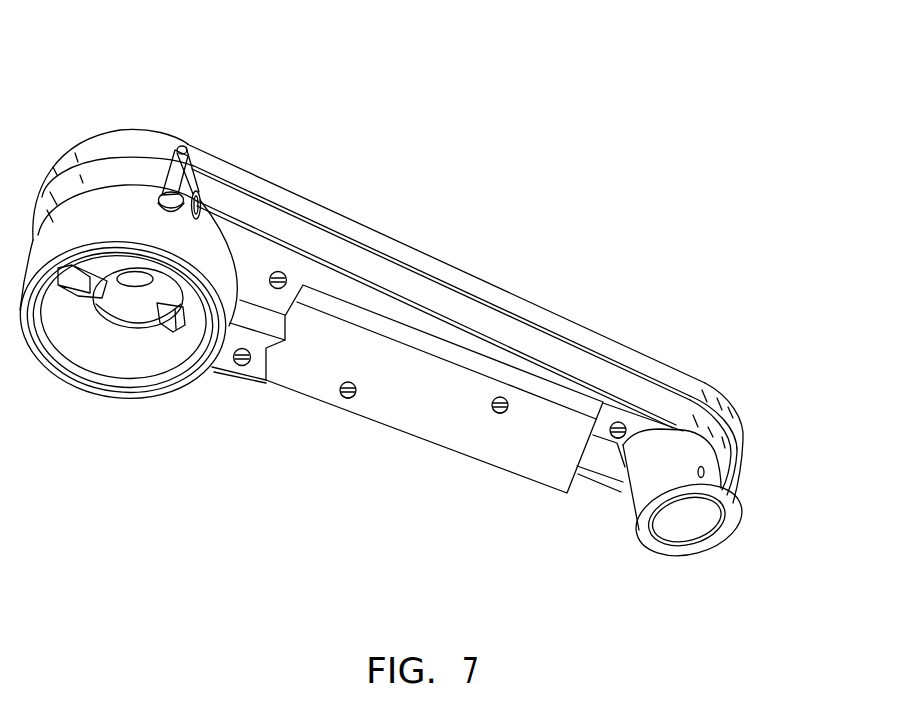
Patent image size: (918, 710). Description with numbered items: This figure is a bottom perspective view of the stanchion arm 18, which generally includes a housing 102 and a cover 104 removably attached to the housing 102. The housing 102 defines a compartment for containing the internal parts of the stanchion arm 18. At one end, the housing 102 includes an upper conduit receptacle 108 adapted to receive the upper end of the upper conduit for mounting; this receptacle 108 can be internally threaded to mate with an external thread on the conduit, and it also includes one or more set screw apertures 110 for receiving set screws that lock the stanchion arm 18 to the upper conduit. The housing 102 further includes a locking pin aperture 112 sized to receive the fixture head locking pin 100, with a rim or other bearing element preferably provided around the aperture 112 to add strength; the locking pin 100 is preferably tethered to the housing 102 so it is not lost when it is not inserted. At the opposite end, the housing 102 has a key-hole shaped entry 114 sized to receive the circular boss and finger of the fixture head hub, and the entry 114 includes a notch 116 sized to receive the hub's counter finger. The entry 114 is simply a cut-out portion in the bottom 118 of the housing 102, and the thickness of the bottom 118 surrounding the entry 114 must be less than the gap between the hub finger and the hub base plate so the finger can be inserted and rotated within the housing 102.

The stanchion arm 18 is at (630, 178).
The fixture head locking pin 100 is at (183, 147).
The housing 102 is at (522, 477).
The cover 104 is at (637, 362).
The upper conduit receptacle 108 is at (717, 527).
The set screw aperture 110 is at (704, 477).
The locking pin aperture 112 is at (162, 178).
The key-hole shaped entry 114 is at (133, 322).
The notch 116 is at (167, 323).
The bottom 118 is at (93, 333).